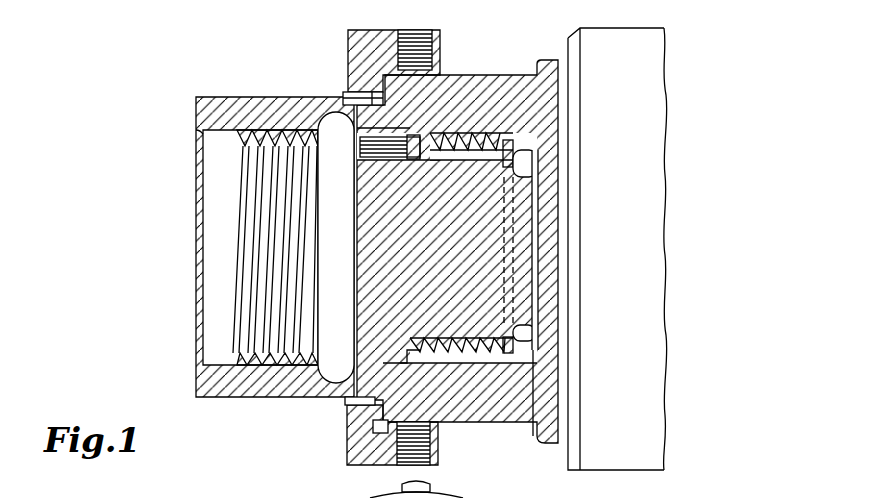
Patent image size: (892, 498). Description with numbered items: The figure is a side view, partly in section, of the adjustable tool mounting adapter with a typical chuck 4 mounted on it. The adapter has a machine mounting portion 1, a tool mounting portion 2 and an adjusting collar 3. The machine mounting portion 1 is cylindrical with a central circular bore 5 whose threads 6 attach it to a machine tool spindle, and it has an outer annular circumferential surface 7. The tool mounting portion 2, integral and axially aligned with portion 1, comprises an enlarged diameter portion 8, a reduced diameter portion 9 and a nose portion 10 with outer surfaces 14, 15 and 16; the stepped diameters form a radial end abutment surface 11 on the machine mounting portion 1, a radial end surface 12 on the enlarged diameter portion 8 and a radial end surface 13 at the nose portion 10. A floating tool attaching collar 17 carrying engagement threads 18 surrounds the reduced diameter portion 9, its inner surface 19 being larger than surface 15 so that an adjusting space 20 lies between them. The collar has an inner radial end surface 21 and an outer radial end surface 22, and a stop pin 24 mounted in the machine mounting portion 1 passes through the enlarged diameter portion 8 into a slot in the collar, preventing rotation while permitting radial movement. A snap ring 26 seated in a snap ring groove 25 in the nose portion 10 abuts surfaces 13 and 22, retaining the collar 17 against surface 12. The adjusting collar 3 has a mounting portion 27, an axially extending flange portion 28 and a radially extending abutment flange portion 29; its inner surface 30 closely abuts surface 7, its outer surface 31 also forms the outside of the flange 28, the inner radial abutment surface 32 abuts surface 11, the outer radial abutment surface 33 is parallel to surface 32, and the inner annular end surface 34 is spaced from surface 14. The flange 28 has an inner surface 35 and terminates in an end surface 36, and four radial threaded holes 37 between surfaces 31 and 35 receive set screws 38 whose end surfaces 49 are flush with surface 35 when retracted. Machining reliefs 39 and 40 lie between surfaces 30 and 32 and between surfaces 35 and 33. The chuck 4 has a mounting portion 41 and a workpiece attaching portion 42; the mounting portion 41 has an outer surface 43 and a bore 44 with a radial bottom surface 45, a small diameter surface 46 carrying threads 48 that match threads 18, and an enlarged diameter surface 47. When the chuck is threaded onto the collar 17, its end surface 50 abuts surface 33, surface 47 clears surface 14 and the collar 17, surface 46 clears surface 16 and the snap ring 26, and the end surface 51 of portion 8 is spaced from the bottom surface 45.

The machine mounting portion 1 is at (232, 93).
The tool mounting portion 2 is at (464, 246).
The adjusting collar 3 is at (392, 110).
The chuck 4 is at (650, 378).
The circular bore 5 is at (240, 135).
The threads 6 is at (262, 160).
The outer annular circumferential surface 7 is at (243, 270).
The enlarged diameter portion 8 is at (380, 330).
The reduced diameter portion 9 is at (385, 298).
The nose portion 10 is at (524, 322).
The radial end abutment surface 11 is at (352, 136).
The radial end surface 12 is at (453, 328).
The radial end surface 13 is at (508, 356).
The outer annular circumferential surface 14 is at (372, 346).
The outer annular circumferential surface 15 is at (490, 340).
The outer annular circumferential surface 16 is at (520, 348).
The floating tool attaching collar 17 is at (482, 142).
The engagement threads 18 is at (468, 140).
The inner annular circumferential surface 19 is at (450, 355).
The adjusting space 20 is at (476, 355).
The inner radial end surface 21 is at (405, 370).
The outer radial end surface 22 is at (510, 143).
The stop pin 24 is at (365, 150).
The annular snap ring groove 25 is at (550, 176).
The snap ring 26 is at (533, 155).
The mounting portion 27 is at (348, 31).
The axially extending flange portion 28 is at (440, 38).
The radially extending abutment flange portion 29 is at (375, 400).
The inner annular circumferential surface 30 is at (375, 94).
The outer annular circumferential surface 31 is at (394, 46).
The inner radial abutment surface 32 is at (383, 76).
The outer radial abutment surface 33 is at (383, 58).
The inner annular end surface 34 is at (372, 178).
The inner annular circumferential surface 35 is at (440, 425).
The radially extending end surface 36 is at (440, 448).
The threaded holes 37 is at (400, 50).
The set screws 38 is at (423, 30).
The machining relief 39 is at (345, 410).
The machining relief 40 is at (391, 451).
The mounting portion 41 is at (542, 85).
The workpiece attaching portion 42 is at (632, 58).
The outer annular circumferential surface 43 is at (503, 425).
The circular bore 44 is at (540, 132).
The radial bottom surface 45 is at (540, 258).
The small diameter inner annular circumferential surface 46 is at (532, 353).
The enlarged diameter inner annular circumferential surface 47 is at (385, 161).
The engagement threads 48 is at (497, 140).
The end surfaces 49 is at (387, 440).
The radially extending end surface 50 is at (372, 102).
The end surface 51 is at (535, 230).